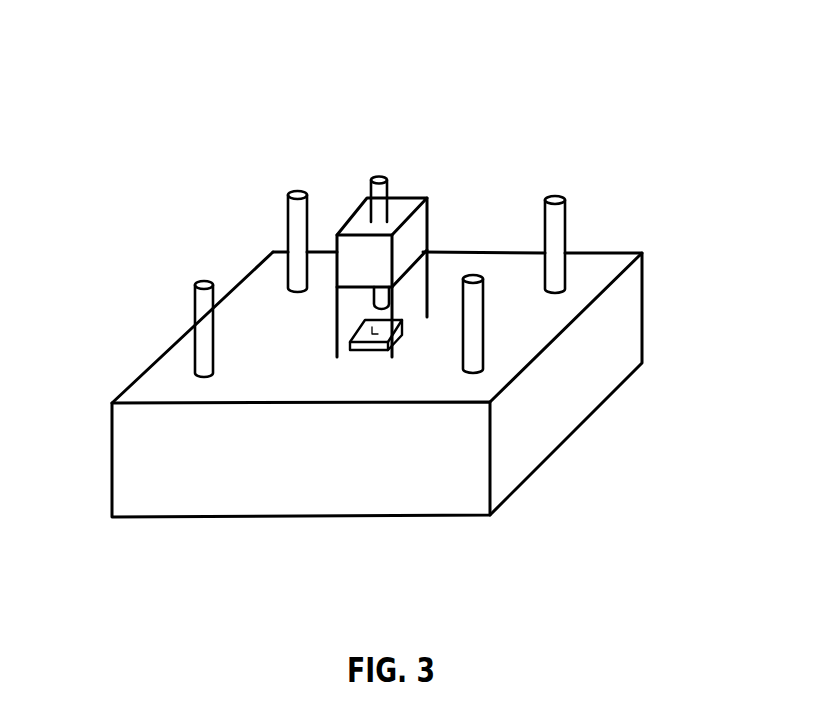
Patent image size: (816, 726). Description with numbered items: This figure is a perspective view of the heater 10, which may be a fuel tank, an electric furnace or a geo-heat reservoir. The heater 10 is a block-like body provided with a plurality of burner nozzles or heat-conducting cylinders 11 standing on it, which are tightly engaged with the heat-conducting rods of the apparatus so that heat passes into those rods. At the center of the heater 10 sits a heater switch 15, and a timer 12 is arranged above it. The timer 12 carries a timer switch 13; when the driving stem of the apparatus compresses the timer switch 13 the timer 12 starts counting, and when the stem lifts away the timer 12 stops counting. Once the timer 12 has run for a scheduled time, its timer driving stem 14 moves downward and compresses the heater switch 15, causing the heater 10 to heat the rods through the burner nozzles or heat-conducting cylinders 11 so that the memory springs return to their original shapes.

The heater 10 is at (528, 463).
The burner nozzles or heat-conducting cylinders 11 is at (553, 238).
The timer 12 is at (350, 235).
The timer switch 13 is at (380, 198).
The timer driving stem 14 is at (370, 307).
The heater switch 15 is at (350, 343).